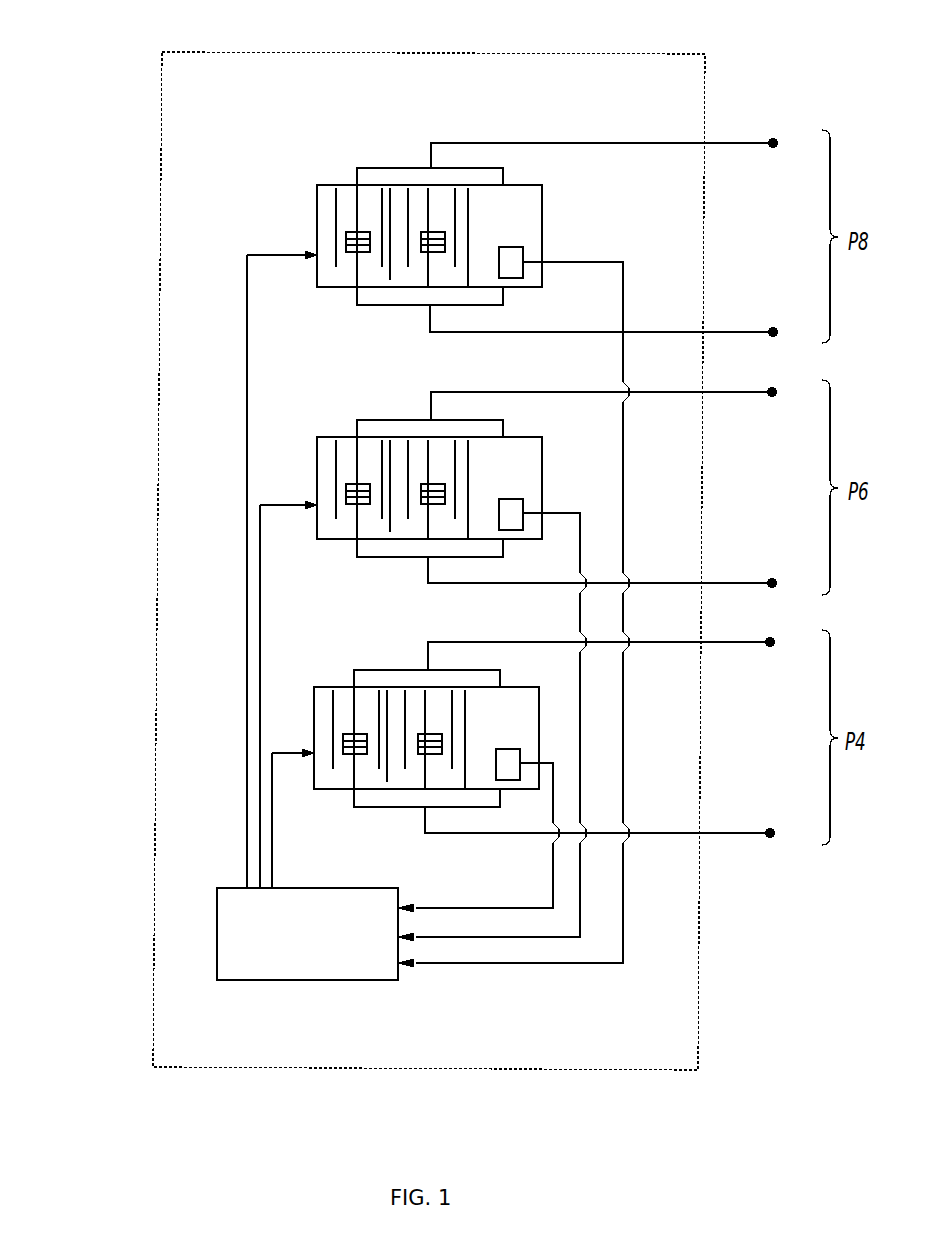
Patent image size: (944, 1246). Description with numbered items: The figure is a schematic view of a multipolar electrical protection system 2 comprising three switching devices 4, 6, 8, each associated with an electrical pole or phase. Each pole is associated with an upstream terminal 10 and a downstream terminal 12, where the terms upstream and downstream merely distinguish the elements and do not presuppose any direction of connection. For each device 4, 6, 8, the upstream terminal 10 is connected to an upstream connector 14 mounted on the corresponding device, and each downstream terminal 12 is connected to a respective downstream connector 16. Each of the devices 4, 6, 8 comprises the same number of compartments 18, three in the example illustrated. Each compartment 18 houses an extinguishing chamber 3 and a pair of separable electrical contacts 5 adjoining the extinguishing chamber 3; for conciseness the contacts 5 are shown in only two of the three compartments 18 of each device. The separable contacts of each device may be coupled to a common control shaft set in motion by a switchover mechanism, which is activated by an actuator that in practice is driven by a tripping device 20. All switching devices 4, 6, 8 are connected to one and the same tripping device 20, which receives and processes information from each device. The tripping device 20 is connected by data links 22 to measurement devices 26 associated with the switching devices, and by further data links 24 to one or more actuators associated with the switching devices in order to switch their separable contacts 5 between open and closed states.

The multipolar electrical protection system 2 is at (128, 76).
The extinguishing chamber 3 is at (395, 457).
The switching device 4 is at (403, 735).
The separable electrical contacts 5 is at (384, 539).
The switching device 6 is at (405, 486).
The switching device 8 is at (407, 235).
The upstream terminal 10 is at (621, 400).
The downstream terminal 12 is at (619, 578).
The upstream connector 14 is at (400, 469).
The downstream connector 16 is at (417, 562).
The compartments 18 is at (426, 442).
The tripping device 20 is at (307, 934).
The data links 22 is at (514, 644).
The data links 24 is at (249, 570).
The measurement devices 26 is at (542, 493).